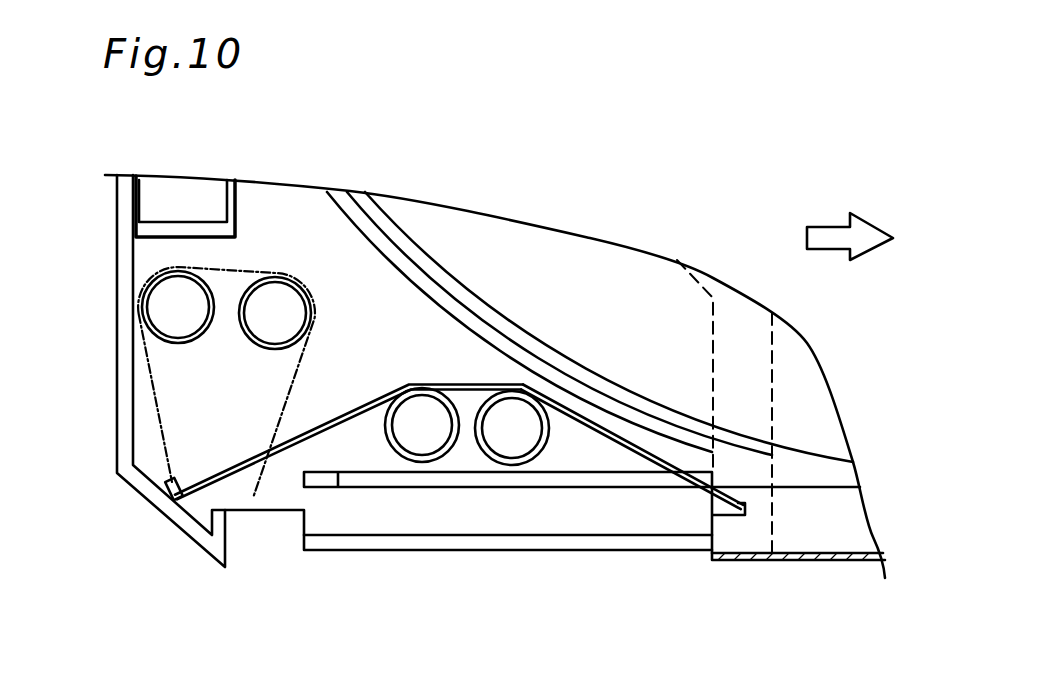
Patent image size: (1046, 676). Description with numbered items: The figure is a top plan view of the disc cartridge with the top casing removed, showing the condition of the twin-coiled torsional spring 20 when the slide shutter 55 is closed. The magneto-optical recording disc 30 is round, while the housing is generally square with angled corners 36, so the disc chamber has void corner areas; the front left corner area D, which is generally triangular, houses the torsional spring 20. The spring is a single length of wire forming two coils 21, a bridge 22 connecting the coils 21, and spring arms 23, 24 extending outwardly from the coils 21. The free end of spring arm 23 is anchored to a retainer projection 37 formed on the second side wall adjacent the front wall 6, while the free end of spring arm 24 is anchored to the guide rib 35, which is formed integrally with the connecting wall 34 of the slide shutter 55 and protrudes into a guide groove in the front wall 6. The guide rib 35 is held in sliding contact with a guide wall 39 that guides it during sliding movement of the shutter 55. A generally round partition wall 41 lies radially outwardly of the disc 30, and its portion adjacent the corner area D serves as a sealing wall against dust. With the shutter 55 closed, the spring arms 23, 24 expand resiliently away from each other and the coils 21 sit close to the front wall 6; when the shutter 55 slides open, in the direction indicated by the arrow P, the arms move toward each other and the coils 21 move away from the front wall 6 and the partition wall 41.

The front wall 6 is at (580, 550).
The twin-coiled torsional spring 20 is at (482, 370).
The coils 21 is at (483, 460).
The bridge 22 is at (450, 384).
The spring arm 23 is at (313, 432).
The spring arm 24 is at (603, 428).
The magneto-optical recording disc 30 is at (477, 235).
The connecting wall 34 is at (837, 562).
The guide rib 35 is at (732, 533).
The angled corner 36 is at (123, 433).
The retainer projection 37 is at (188, 478).
The guide wall 39 is at (367, 482).
The round partition wall 41 is at (425, 287).
The slide shutter 55 is at (677, 260).
The front left corner area D is at (350, 257).
The direction of movement P is at (829, 236).